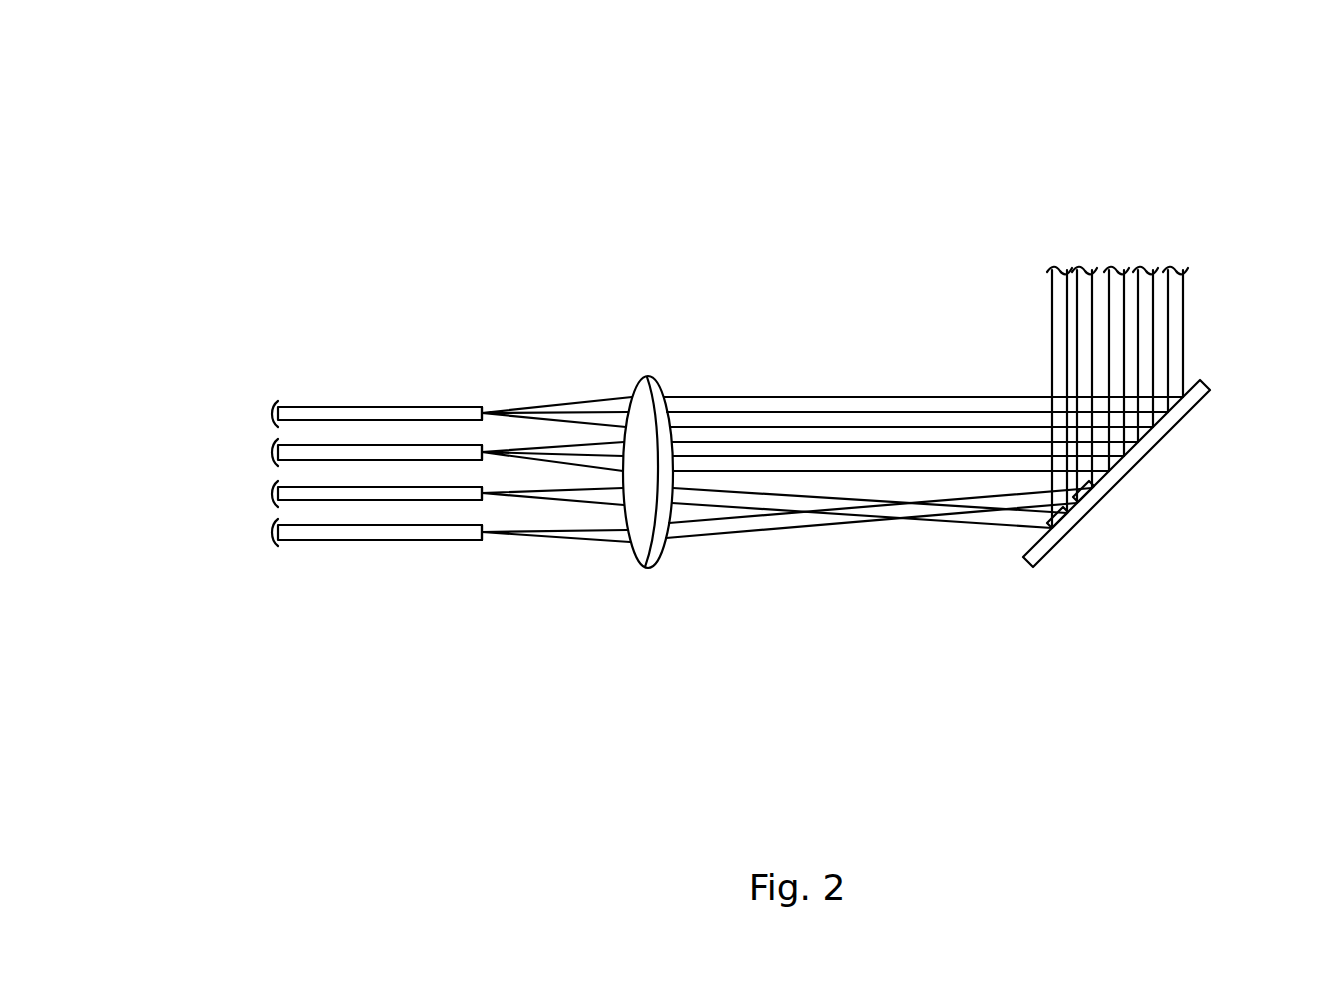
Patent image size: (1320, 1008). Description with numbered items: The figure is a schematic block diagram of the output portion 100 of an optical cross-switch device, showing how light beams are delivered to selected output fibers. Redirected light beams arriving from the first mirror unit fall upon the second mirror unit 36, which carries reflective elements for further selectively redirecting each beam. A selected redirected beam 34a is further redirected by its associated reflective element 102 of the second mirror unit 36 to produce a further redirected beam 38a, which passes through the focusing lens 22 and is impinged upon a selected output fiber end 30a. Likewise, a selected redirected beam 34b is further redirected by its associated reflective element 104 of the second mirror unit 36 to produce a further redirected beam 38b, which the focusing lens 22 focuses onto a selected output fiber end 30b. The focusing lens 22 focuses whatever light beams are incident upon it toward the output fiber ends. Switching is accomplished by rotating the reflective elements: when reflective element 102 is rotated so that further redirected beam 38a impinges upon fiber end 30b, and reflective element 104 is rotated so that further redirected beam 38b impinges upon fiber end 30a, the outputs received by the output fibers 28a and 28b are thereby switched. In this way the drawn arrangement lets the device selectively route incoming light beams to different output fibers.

The output portion 100 is at (1196, 142).
The focusing lens 22 is at (657, 396).
The output fiber 28a is at (313, 532).
The output fiber 28b is at (302, 492).
The output fiber end 30a is at (488, 540).
The output fiber end 30b is at (492, 470).
The selected redirected beam 34a is at (1057, 285).
The selected redirected beam 34b is at (1085, 287).
The second mirror unit 36 is at (1162, 435).
The further redirected beam 38a is at (1010, 522).
The further redirected beam 38b is at (1027, 490).
The reflective element 102 is at (1058, 530).
The reflective element 104 is at (1093, 496).